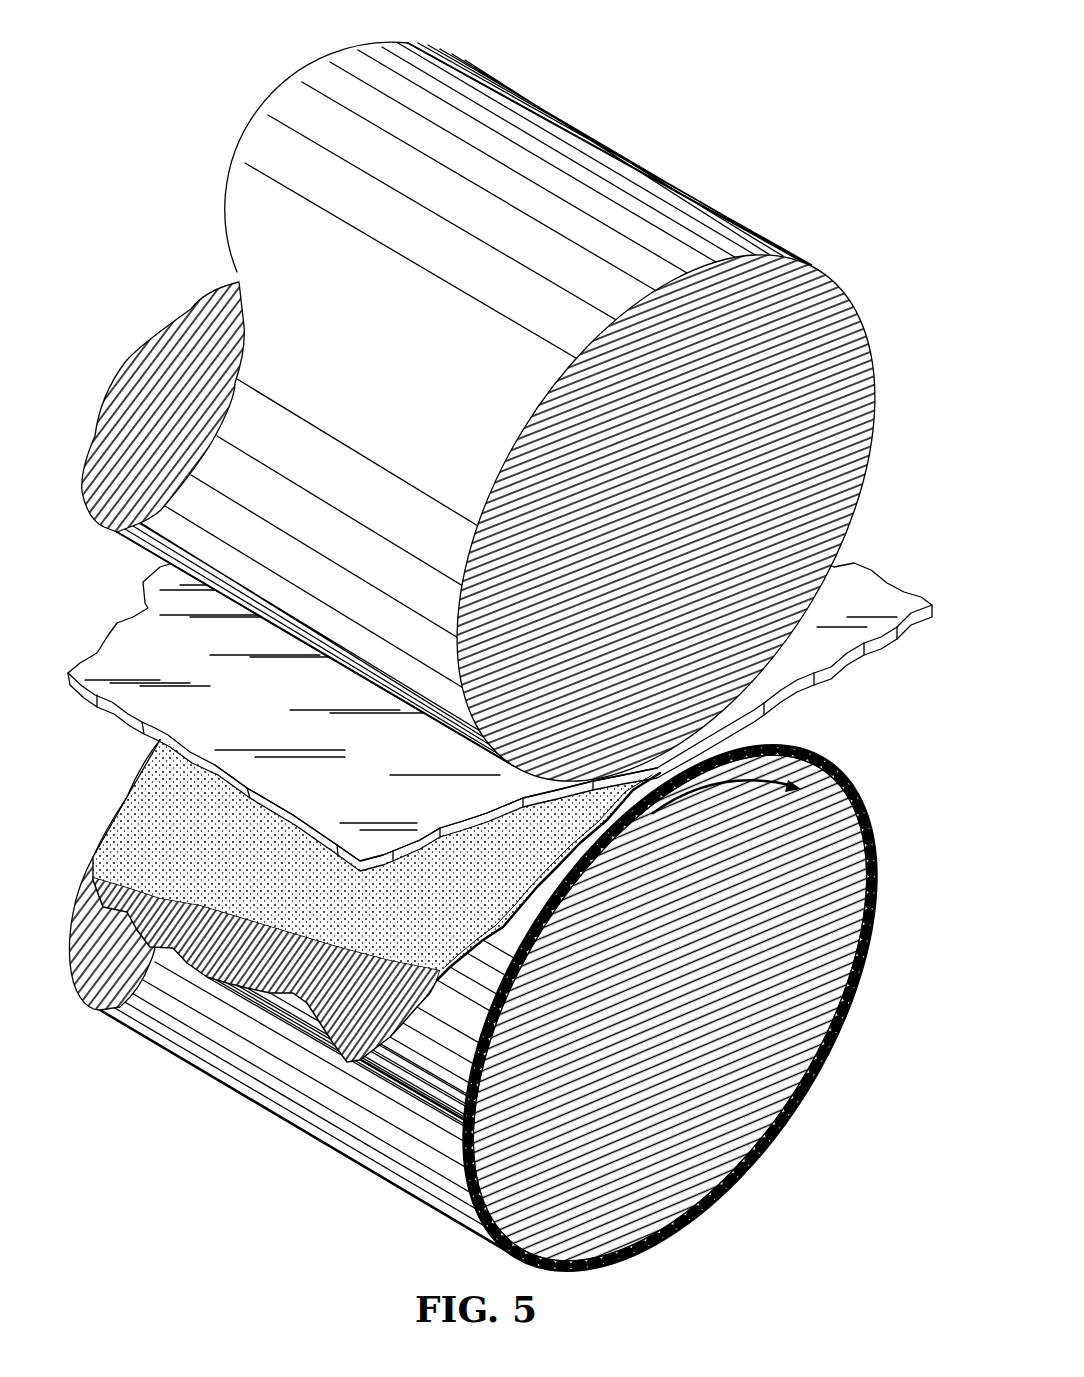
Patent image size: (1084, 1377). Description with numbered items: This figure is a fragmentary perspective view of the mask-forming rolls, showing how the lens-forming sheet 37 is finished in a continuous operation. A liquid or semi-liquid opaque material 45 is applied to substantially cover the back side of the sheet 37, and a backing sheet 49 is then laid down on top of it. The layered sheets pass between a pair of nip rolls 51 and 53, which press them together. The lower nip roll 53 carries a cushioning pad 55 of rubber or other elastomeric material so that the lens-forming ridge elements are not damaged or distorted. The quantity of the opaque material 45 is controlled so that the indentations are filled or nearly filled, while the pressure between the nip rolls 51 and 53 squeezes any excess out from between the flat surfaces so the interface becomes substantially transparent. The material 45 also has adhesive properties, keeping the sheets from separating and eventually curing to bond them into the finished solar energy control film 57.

The sheet 37 is at (403, 1020).
The liquid or semi-liquid opaque material 45 is at (473, 902).
The backing sheet 49 is at (447, 815).
The nip roll 51 is at (797, 255).
The nip roll 53 is at (831, 800).
The cushioning pad 55 is at (747, 1180).
The solar energy control film 57 is at (866, 590).